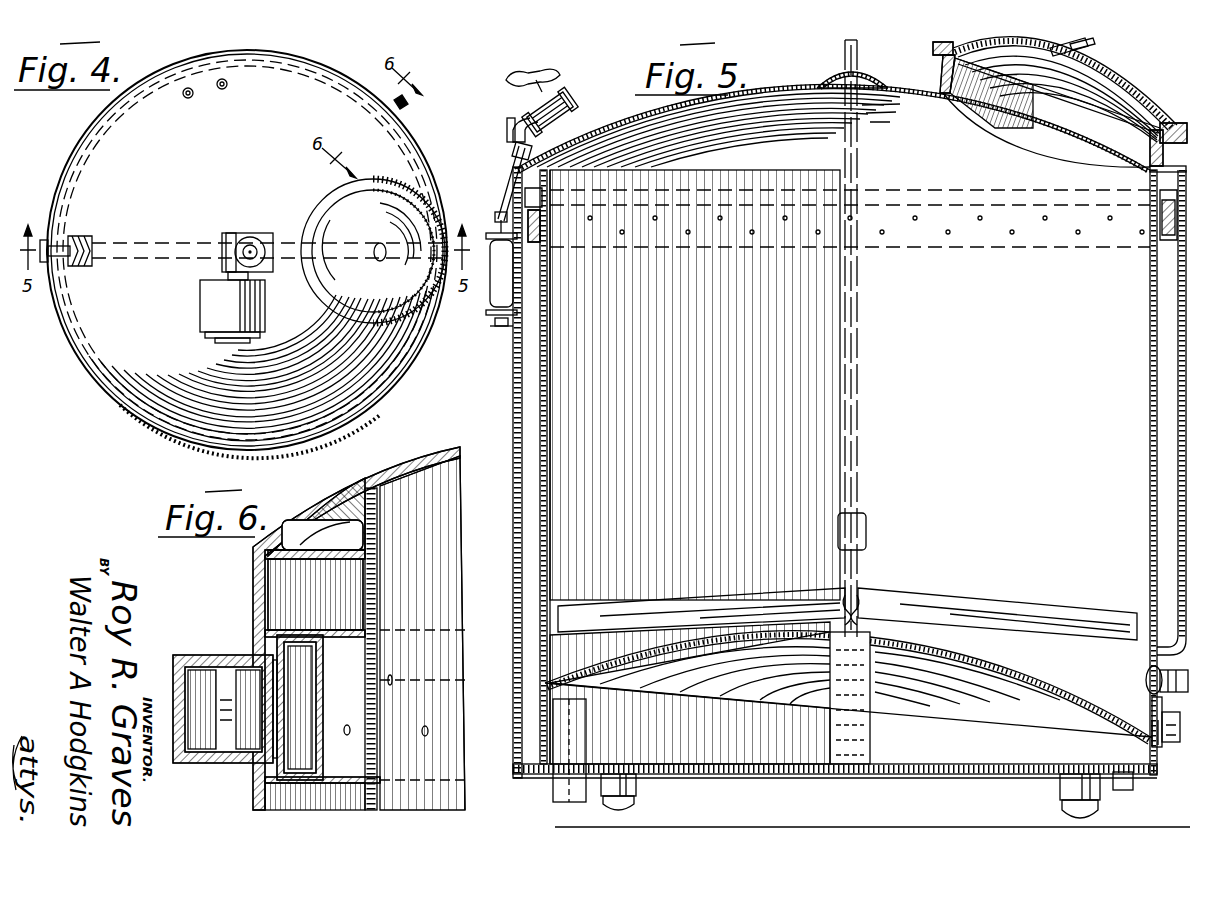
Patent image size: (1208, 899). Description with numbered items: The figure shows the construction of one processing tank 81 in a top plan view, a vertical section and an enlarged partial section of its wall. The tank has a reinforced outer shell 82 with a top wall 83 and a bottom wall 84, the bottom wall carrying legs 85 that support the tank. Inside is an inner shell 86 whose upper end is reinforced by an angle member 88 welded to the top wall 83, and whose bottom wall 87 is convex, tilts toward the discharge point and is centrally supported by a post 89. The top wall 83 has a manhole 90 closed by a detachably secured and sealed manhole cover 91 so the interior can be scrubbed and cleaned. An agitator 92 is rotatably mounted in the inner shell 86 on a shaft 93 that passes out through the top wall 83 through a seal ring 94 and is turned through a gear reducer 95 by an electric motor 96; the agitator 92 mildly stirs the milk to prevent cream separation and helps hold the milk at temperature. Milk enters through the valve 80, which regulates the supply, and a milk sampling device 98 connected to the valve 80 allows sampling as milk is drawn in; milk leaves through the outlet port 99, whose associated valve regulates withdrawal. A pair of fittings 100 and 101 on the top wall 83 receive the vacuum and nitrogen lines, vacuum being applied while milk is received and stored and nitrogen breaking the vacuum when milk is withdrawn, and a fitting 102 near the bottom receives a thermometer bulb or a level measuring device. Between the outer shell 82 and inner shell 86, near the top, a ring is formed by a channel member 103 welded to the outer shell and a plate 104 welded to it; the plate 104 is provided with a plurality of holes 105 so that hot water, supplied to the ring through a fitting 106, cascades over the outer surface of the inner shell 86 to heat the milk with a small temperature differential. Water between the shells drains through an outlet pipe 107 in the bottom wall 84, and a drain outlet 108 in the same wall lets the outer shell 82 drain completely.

In FIG. 4, the valve 80 is at (72, 242).
In FIG. 5, the valve 80 is at (560, 112).
In FIG. 4, the processing tank 81 is at (126, 420).
In FIG. 5, the processing tank 81 is at (513, 405).
In FIG. 5, the reinforced outer shell 82 is at (513, 440).
In FIG. 6, the reinforced outer shell 82 is at (252, 798).
In FIG. 4, the top wall 83 is at (100, 352).
In FIG. 5, the top wall 83 is at (668, 118).
In FIG. 6, the top wall 83 is at (426, 460).
In FIG. 5, the bottom wall 84 is at (682, 775).
In FIG. 5, the legs 85 is at (636, 790).
In FIG. 5, the inner shell 86 is at (545, 470).
In FIG. 6, the inner shell 86 is at (370, 603).
In FIG. 5, the bottom wall 87 is at (1005, 680).
In FIG. 5, the angle member 88 is at (512, 156).
In FIG. 6, the angle member 88 is at (318, 556).
In FIG. 5, the post 89 is at (830, 740).
In FIG. 5, the manhole 90 is at (940, 70).
In FIG. 4, the manhole cover 91 is at (415, 197).
In FIG. 5, the manhole cover 91 is at (1112, 85).
In FIG. 5, the agitator 92 is at (948, 604).
In FIG. 4, the shaft 93 is at (268, 252).
In FIG. 5, the shaft 93 is at (858, 484).
In FIG. 5, the seal ring 94 is at (870, 72).
In FIG. 4, the gear reducer 95 is at (252, 238).
In FIG. 4, the electric motor 96 is at (200, 313).
In FIG. 5, the milk sampling device 98 is at (498, 220).
In FIG. 5, the outlet port 99 is at (1172, 748).
In FIG. 4, the fitting 100 is at (186, 120).
In FIG. 4, the fitting 101 is at (230, 112).
In FIG. 5, the fitting 102 is at (1148, 690).
In FIG. 5, the channel member 103 is at (530, 267).
In FIG. 6, the channel member 103 is at (300, 707).
In FIG. 5, the plate 104 is at (545, 230).
In FIG. 6, the plate 104 is at (306, 714).
In FIG. 5, the perforations 105 is at (700, 238).
In FIG. 6, the perforations 105 is at (340, 733).
In FIG. 4, the fitting 106 is at (422, 116).
In FIG. 6, the fitting 106 is at (218, 658).
In FIG. 5, the outlet pipe 107 is at (586, 734).
In FIG. 5, the drain outlet 108 is at (1133, 790).